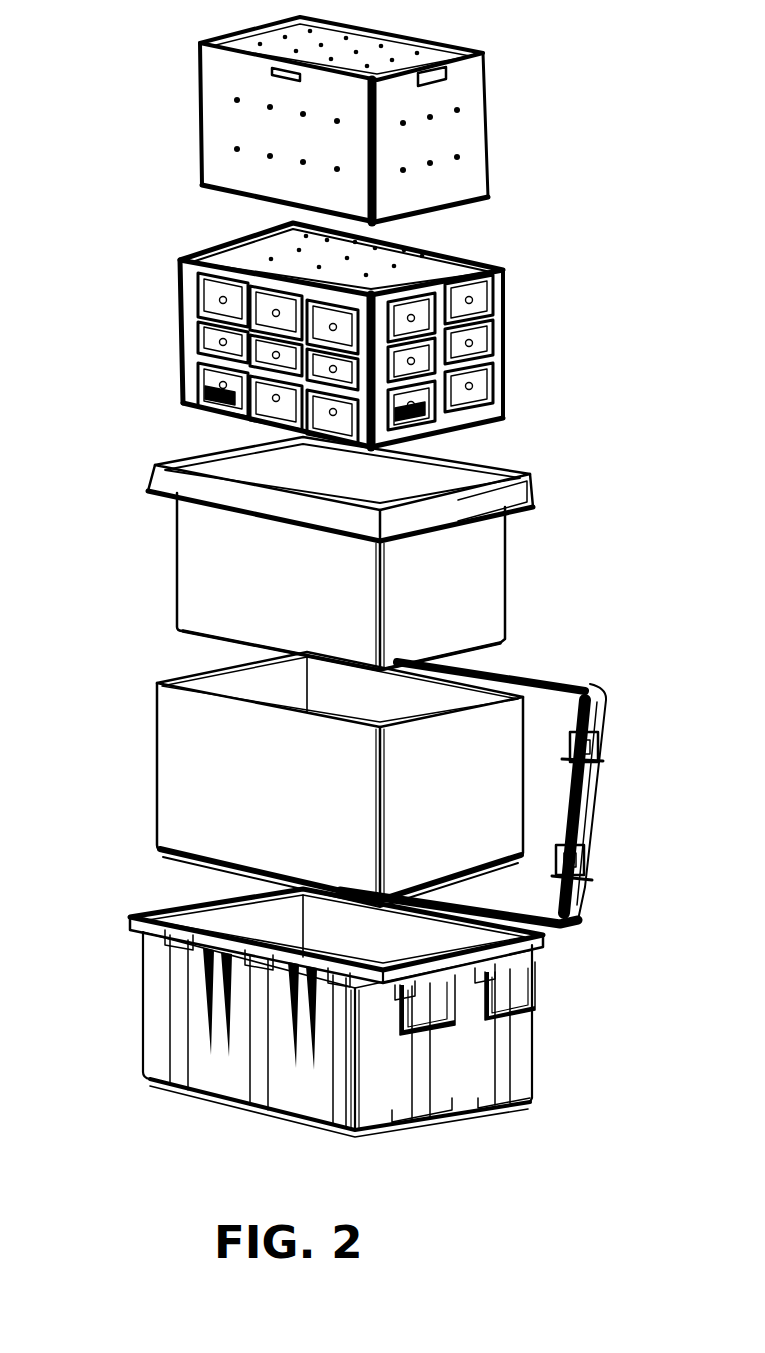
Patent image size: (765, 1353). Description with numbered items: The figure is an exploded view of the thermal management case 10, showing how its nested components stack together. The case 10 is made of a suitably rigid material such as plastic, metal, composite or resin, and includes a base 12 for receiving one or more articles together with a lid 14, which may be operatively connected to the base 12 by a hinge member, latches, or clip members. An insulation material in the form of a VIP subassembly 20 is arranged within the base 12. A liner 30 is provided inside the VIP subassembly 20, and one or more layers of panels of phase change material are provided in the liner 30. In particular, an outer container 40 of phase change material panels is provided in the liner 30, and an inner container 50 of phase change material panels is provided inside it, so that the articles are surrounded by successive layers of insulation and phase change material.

The thermal management case 10 is at (548, 432).
The base 12 is at (540, 1030).
The lid 14 is at (594, 798).
The VIP subassembly 20 is at (136, 747).
The liner 30 is at (138, 540).
The outer container 40 is at (138, 316).
The inner container 50 is at (138, 117).